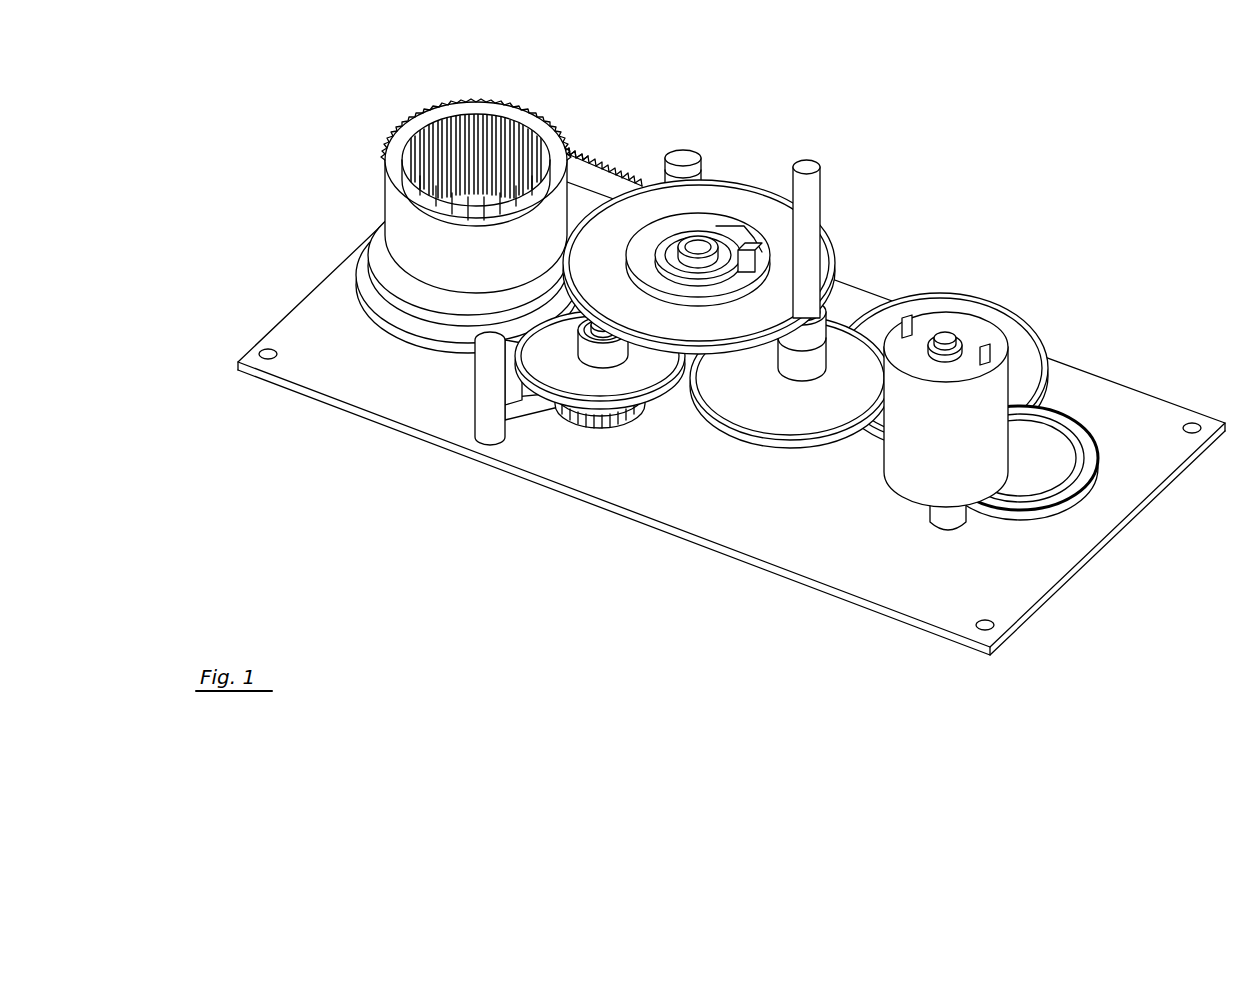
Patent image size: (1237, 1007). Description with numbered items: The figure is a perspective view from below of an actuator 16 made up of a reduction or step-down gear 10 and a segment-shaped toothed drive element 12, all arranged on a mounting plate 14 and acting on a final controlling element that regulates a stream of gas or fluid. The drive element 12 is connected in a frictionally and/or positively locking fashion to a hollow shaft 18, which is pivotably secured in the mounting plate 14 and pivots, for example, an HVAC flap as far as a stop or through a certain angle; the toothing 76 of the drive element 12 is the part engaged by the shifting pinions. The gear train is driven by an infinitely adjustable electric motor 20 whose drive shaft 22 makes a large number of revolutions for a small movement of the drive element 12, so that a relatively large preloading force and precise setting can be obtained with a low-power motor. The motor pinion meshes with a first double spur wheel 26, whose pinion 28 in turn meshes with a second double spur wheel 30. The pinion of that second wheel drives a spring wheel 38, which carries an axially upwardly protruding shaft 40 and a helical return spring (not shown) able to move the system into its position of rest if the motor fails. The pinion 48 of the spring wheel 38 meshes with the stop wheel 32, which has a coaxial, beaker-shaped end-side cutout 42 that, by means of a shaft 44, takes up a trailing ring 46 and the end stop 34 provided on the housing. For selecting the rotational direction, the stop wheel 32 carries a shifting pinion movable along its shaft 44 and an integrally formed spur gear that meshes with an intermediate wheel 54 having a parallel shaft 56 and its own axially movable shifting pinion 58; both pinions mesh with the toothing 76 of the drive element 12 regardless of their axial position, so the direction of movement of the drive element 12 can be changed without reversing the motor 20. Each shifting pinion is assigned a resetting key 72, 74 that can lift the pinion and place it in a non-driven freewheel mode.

The reduction gear 10 is at (655, 468).
The toothed drive element 12 is at (598, 146).
The mounting plate 14 is at (1158, 413).
The actuator 16 is at (345, 503).
The hollow shaft 18 is at (500, 108).
The electric motor 20 is at (915, 488).
The drive shaft 22 is at (945, 525).
The first double spur wheel 26 is at (1077, 433).
The pinion 28 is at (1014, 435).
The second double spur wheel 30 is at (1025, 368).
The stop wheel 32 is at (700, 248).
The end stop 34 is at (752, 246).
The spring wheel 38 is at (838, 422).
The shaft 40 is at (812, 192).
The end-side cutout 42 is at (648, 252).
The shaft 44 is at (720, 197).
The trailing ring 46 is at (630, 385).
The pinion 48 is at (855, 310).
The intermediate wheel 54 is at (588, 347).
The shaft 56 is at (588, 380).
The shifting pinion 58 is at (685, 285).
The resetting key 72 is at (493, 397).
The resetting key 74 is at (683, 162).
The teeth 76 is at (577, 147).